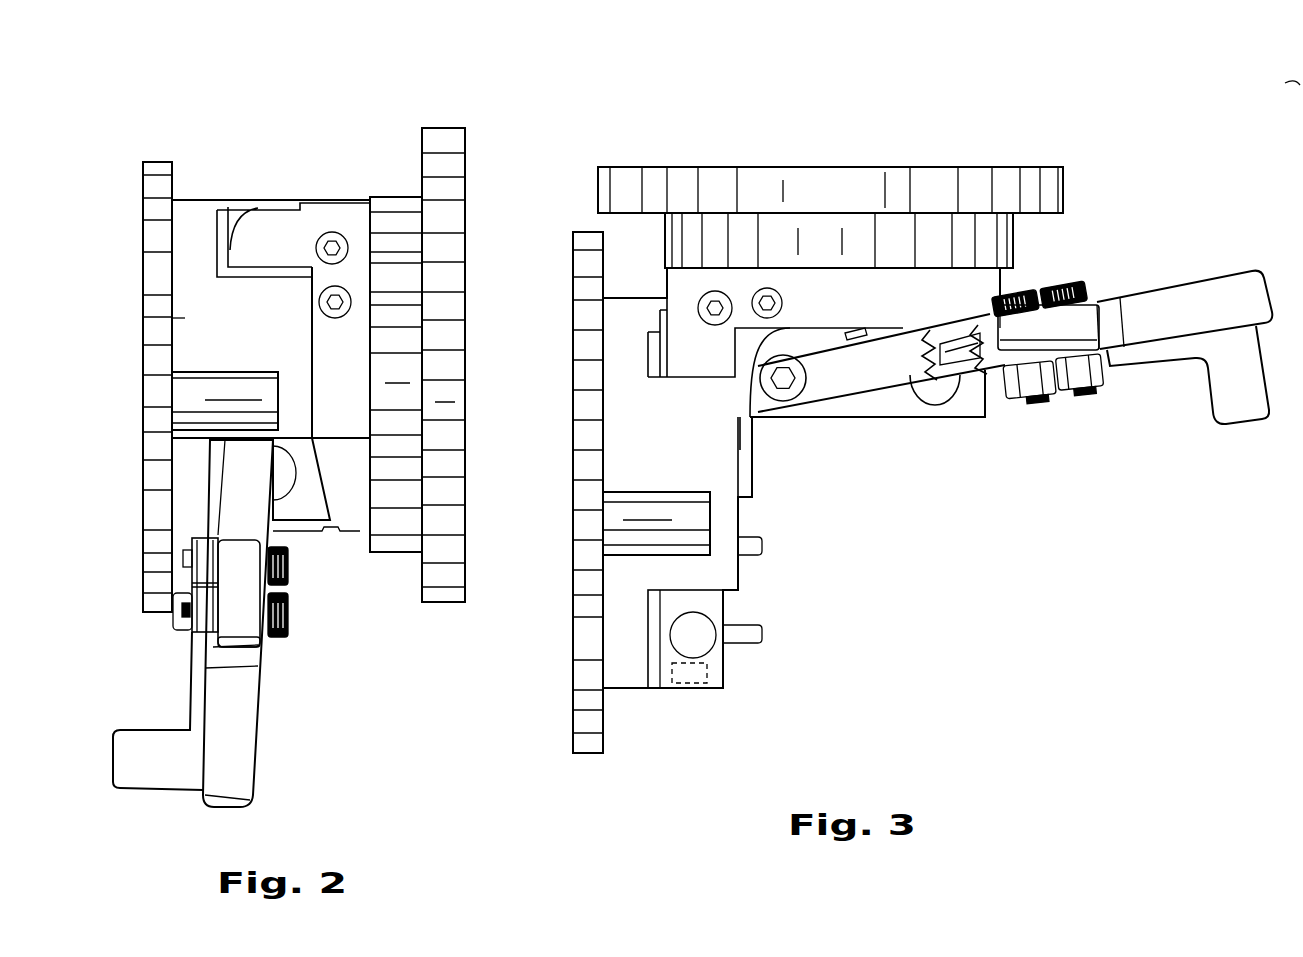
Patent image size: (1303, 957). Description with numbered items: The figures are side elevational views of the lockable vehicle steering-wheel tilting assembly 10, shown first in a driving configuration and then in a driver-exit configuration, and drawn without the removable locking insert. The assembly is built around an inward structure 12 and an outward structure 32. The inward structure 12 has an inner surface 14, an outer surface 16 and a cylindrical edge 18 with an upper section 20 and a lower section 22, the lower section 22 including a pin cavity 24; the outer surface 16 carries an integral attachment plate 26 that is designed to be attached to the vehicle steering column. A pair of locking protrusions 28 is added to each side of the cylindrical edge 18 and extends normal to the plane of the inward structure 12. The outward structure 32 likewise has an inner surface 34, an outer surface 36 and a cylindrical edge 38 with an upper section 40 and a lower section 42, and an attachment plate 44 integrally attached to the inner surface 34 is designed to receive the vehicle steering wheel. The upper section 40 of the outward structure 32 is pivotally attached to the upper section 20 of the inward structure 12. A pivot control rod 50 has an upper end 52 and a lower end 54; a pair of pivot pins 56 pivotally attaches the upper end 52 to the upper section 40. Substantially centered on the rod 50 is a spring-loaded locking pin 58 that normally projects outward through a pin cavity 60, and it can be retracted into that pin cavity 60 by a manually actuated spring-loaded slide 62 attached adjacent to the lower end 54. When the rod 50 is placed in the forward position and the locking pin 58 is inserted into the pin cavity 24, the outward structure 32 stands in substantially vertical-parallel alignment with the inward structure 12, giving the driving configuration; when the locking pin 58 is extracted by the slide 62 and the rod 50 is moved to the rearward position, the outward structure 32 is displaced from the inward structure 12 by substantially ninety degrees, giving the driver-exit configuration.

In FIG. 3, the lockable vehicle steering-wheel tilting assembly 10 is at (1265, 150).
In FIG. 2, the inward structure 12 is at (274, 249).
In FIG. 3, the inward structure 12 is at (742, 488).
In FIG. 2, the inner surface 14 is at (312, 328).
In FIG. 2, the outer surface 16 is at (172, 318).
In FIG. 2, the cylindrical edge 18 is at (114, 269).
In FIG. 3, the cylindrical edge 18 is at (562, 343).
In FIG. 2, the upper section 20 is at (195, 258).
In FIG. 3, the upper section 20 is at (630, 305).
In FIG. 2, the lower section 22 is at (195, 525).
In FIG. 3, the pin cavity 24 is at (700, 672).
In FIG. 2, the attachment plate 26 is at (148, 175).
In FIG. 3, the attachment plate 26 is at (585, 680).
In FIG. 2, the locking protrusions 28 is at (193, 395).
In FIG. 3, the locking protrusions 28 is at (690, 530).
In FIG. 2, the outward structure 32 is at (316, 215).
In FIG. 3, the outward structure 32 is at (1000, 272).
In FIG. 2, the inner surface 34 is at (372, 248).
In FIG. 3, the inner surface 34 is at (910, 210).
In FIG. 2, the outer surface 36 is at (310, 350).
In FIG. 3, the outer surface 36 is at (933, 407).
In FIG. 2, the cylindrical edge 38 is at (345, 189).
In FIG. 3, the cylindrical edge 38 is at (610, 297).
In FIG. 2, the upper section 40 is at (350, 213).
In FIG. 3, the upper section 40 is at (732, 235).
In FIG. 2, the lower section 42 is at (348, 535).
In FIG. 3, the lower section 42 is at (1000, 282).
In FIG. 2, the attachment plate 44 is at (448, 140).
In FIG. 3, the attachment plate 44 is at (673, 190).
In FIG. 2, the pivot control rod 50 is at (240, 685).
In FIG. 3, the pivot control rod 50 is at (870, 372).
In FIG. 3, the upper end 52 is at (757, 404).
In FIG. 2, the lower end 54 is at (235, 812).
In FIG. 3, the lower end 54 is at (1267, 273).
In FIG. 3, the pivot pins 56 is at (783, 386).
In FIG. 3, the spring-loaded locking pin 58 is at (987, 370).
In FIG. 3, the pin cavity 60 is at (958, 300).
In FIG. 2, the spring-loaded slide 62 is at (170, 760).
In FIG. 3, the spring-loaded slide 62 is at (1245, 400).